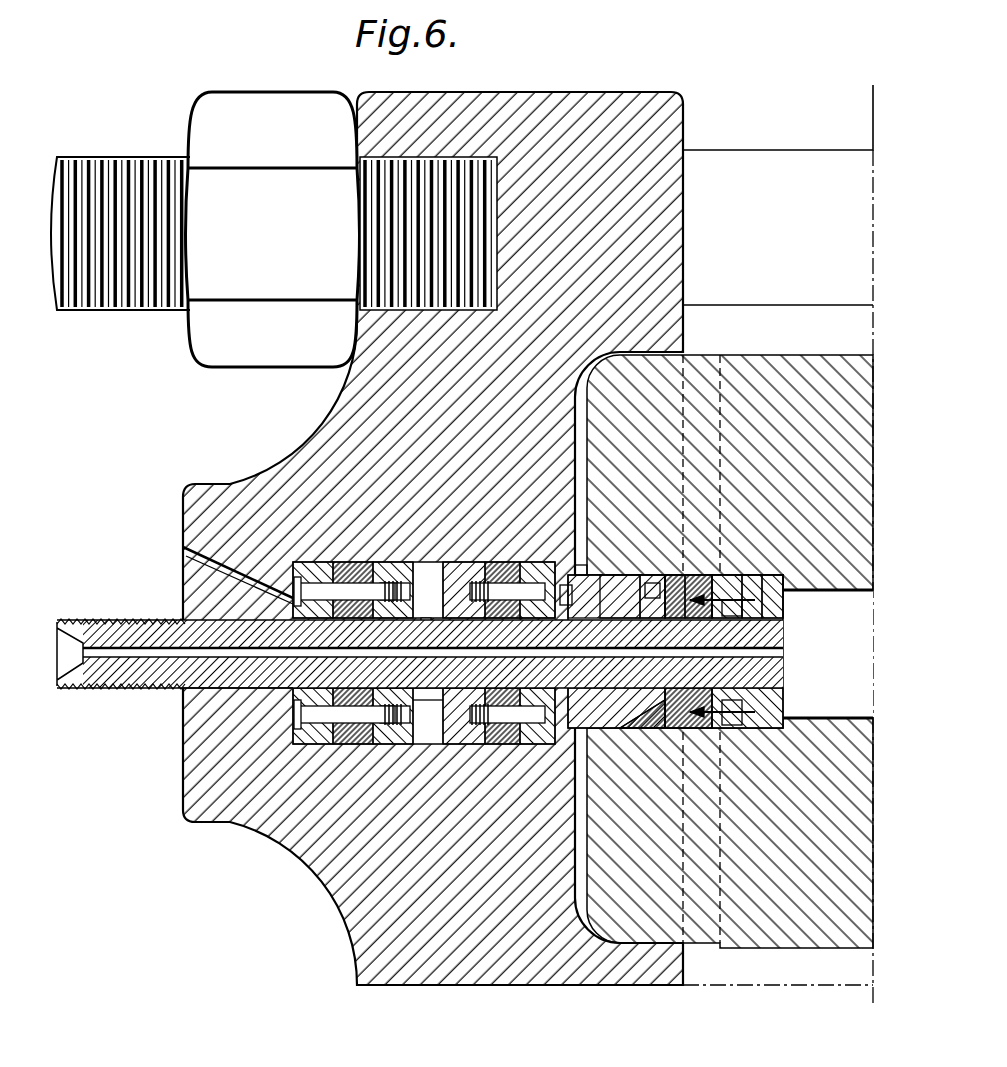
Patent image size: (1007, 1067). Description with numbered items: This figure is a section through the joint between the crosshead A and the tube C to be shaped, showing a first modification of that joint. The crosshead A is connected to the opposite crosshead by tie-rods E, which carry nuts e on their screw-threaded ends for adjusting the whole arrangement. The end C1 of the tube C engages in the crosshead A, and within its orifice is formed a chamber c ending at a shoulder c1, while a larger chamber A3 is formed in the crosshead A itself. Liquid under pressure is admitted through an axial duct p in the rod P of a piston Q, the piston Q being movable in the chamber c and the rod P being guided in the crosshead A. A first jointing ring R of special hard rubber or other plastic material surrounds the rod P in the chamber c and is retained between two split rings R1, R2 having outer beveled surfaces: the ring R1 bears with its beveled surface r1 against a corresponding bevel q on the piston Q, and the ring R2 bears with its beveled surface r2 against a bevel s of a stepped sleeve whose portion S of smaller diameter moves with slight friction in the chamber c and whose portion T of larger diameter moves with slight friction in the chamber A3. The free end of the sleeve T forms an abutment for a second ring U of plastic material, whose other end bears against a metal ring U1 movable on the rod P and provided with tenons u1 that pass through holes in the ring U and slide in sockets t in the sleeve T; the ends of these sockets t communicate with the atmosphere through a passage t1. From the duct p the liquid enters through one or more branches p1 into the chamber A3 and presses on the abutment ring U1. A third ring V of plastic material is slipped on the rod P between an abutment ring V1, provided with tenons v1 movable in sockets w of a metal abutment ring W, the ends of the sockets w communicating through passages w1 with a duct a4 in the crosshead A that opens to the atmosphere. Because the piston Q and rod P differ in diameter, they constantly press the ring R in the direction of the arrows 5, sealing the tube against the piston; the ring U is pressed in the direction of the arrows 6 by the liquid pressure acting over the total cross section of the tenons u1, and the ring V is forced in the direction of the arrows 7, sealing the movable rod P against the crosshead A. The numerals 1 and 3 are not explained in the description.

The crosshead A is at (345, 445).
The nut e is at (247, 352).
The tie-rod E is at (774, 170).
The tube C is at (858, 491).
The tube end C1 is at (703, 375).
The piston Q is at (790, 684).
The sleeve portion of larger diameter T is at (560, 580).
The passage t1 is at (582, 580).
The sleeve portion of smaller diameter S is at (625, 585).
The bevel s is at (650, 590).
The beveled surface r2 is at (668, 590).
The split ring R2 is at (692, 585).
The split ring R1 is at (722, 590).
The beveled surface r1 is at (750, 592).
The bevel q is at (778, 590).
The shoulder c1 is at (786, 589).
The socket t is at (550, 770).
The passage 1 is at (648, 596).
The passage 3 is at (732, 612).
The arrows 5 is at (736, 726).
The chamber c is at (650, 730).
The first jointing ring R is at (690, 730).
The metal abutment ring W is at (293, 601).
The socket w is at (340, 575).
The third ring V is at (383, 572).
The tenon v1 is at (345, 776).
The abutment ring V1 is at (432, 572).
The tenon u1 is at (498, 575).
The second ring U is at (530, 572).
The metal ring U1 is at (465, 568).
The passage w1 is at (273, 720).
The duct a4 is at (198, 561).
The branch p1 is at (431, 640).
The chamber A3 is at (422, 745).
The axial duct p is at (133, 653).
The piston rod P is at (240, 690).
The arrows 7 is at (363, 651).
The arrows 6 is at (479, 651).